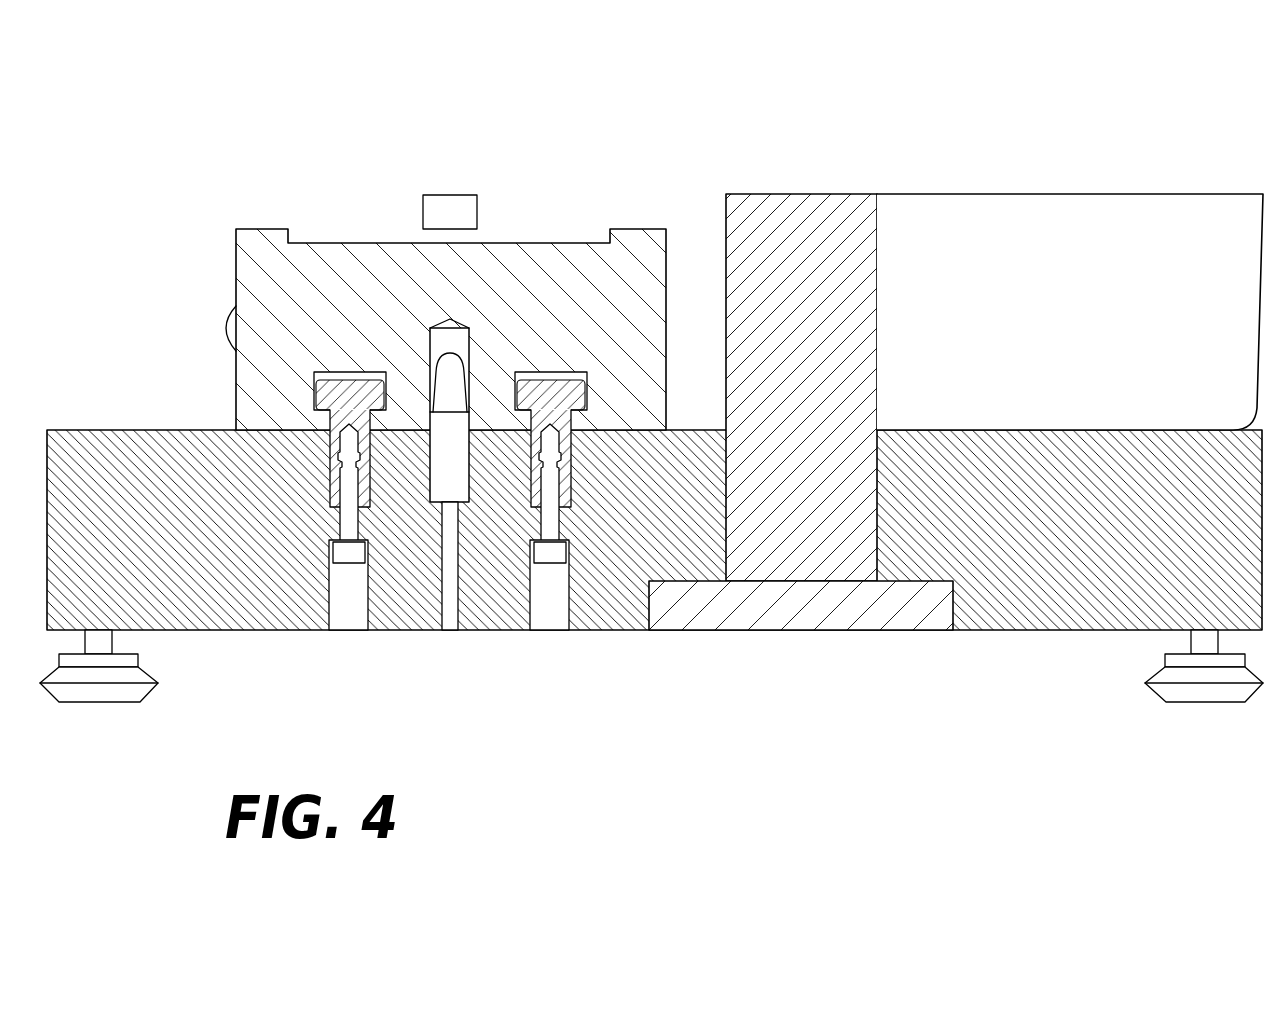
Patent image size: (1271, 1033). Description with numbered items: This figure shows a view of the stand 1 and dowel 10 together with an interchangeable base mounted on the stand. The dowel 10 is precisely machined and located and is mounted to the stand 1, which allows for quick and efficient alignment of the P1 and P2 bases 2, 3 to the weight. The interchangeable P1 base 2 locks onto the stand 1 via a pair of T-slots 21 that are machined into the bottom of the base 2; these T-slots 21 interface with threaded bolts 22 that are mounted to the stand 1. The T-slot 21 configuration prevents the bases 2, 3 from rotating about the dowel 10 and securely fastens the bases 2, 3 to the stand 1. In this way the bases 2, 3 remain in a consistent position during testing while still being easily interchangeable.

The stand 1 is at (132, 412).
The P1 base 2 is at (505, 243).
The P2 base 3 is at (649, 212).
The dowel 10 is at (455, 326).
The T-slots 21 is at (292, 356).
The threaded bolts 22 is at (312, 416).